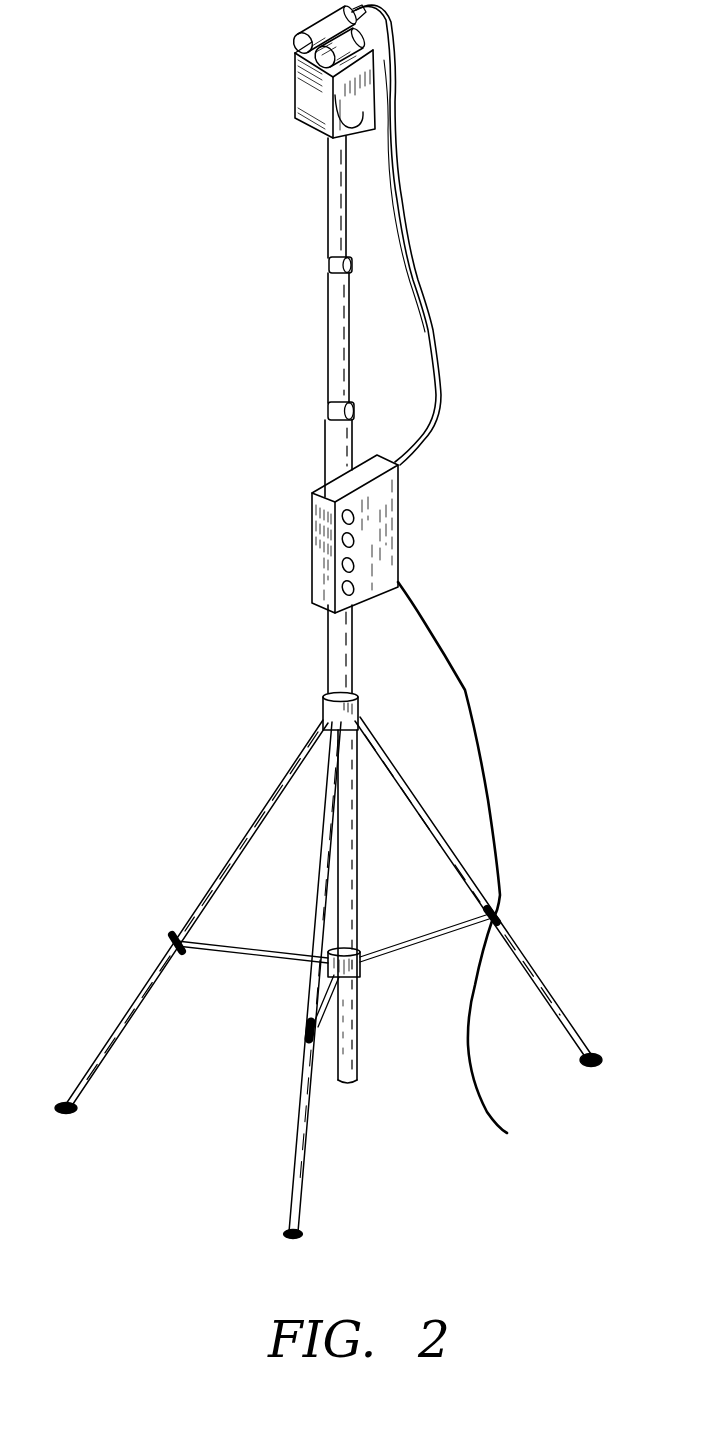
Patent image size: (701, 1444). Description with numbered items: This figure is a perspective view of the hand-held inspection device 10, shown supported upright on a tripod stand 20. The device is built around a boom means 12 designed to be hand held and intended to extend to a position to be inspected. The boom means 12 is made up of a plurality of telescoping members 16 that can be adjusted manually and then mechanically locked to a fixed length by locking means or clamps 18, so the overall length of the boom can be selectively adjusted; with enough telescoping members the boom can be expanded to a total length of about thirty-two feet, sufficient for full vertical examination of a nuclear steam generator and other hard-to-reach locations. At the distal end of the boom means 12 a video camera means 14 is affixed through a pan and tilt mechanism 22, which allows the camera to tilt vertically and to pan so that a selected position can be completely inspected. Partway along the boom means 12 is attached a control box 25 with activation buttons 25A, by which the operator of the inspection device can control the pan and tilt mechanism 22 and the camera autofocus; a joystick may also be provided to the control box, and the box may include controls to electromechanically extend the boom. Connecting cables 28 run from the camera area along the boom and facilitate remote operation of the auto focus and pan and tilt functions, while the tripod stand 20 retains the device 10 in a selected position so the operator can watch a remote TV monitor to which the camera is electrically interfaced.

The inspection device 10 is at (537, 599).
The boom means 12 is at (322, 457).
The video camera means 14 is at (330, 13).
The telescoping members 16 is at (328, 205).
The locking means or clamps 18 is at (354, 266).
The tripod stand 20 is at (425, 806).
The pan and tilt mechanism 22 is at (257, 101).
The control box 25 is at (385, 556).
The activation buttons 25A is at (356, 540).
The connecting cables 28 is at (430, 348).